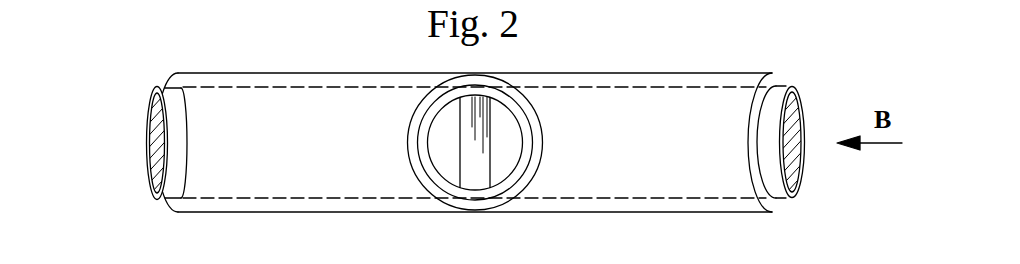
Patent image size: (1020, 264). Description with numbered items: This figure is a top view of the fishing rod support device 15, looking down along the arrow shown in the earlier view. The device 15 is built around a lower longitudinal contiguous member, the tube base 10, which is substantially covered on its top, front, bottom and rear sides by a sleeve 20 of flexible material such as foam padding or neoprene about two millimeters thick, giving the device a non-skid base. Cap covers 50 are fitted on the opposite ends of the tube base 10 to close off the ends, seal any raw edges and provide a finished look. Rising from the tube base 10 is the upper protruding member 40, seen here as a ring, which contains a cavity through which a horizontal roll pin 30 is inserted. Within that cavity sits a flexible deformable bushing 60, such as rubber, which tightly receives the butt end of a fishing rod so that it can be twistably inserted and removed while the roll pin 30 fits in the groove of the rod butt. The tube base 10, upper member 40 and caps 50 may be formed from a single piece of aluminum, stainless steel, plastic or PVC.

The support device 15 is at (500, 99).
The tube base 10 is at (475, 72).
The sleeve 20 is at (461, 232).
The roll pin 30 is at (535, 113).
The upper protruding member 40 is at (434, 118).
The cap covers 50 is at (467, 150).
The bushing 60 is at (440, 174).